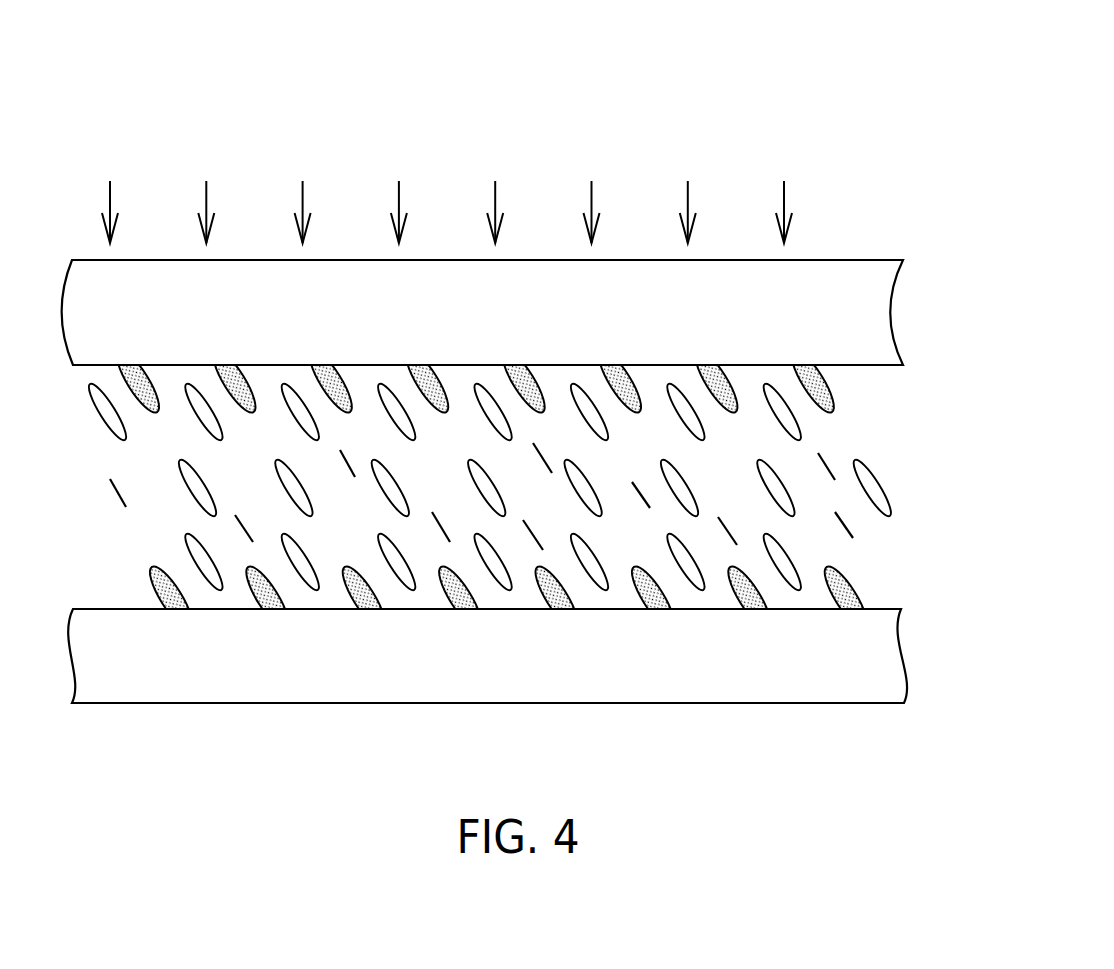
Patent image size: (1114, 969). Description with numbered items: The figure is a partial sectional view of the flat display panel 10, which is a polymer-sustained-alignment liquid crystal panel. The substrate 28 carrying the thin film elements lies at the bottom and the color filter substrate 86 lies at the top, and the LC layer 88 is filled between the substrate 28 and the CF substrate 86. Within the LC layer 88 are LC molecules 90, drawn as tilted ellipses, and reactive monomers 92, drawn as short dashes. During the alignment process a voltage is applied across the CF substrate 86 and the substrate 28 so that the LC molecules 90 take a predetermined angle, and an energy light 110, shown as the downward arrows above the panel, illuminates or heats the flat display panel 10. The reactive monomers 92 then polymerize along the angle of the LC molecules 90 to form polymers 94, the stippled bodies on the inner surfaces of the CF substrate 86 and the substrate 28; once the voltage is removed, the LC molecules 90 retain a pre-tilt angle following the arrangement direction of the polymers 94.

The flat display panel 10 is at (946, 170).
The energy light 110 is at (785, 197).
The color filter (CF) substrate 86 is at (476, 327).
The substrate 28 is at (475, 671).
The LC layer 88 is at (948, 366).
The polymers 94 is at (825, 386).
The LC molecules 90 is at (878, 483).
The reactive monomers 92 is at (845, 523).